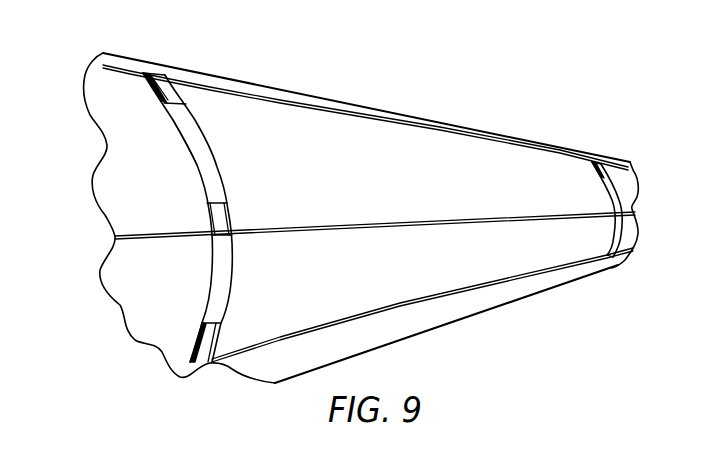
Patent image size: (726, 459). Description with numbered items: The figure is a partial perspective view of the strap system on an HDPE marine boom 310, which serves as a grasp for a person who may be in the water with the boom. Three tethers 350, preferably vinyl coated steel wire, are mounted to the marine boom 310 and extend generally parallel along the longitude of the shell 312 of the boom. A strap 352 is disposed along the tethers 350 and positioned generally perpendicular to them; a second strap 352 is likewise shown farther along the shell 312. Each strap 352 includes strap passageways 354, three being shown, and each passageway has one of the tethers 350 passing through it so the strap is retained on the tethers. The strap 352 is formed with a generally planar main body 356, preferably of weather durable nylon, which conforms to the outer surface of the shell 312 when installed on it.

The marine boom 310 is at (391, 205).
The shell 312 is at (345, 147).
The tethers 350 is at (537, 143).
The strap 352 is at (219, 267).
The strap passageways 354 is at (151, 72).
The main body 356 is at (202, 148).